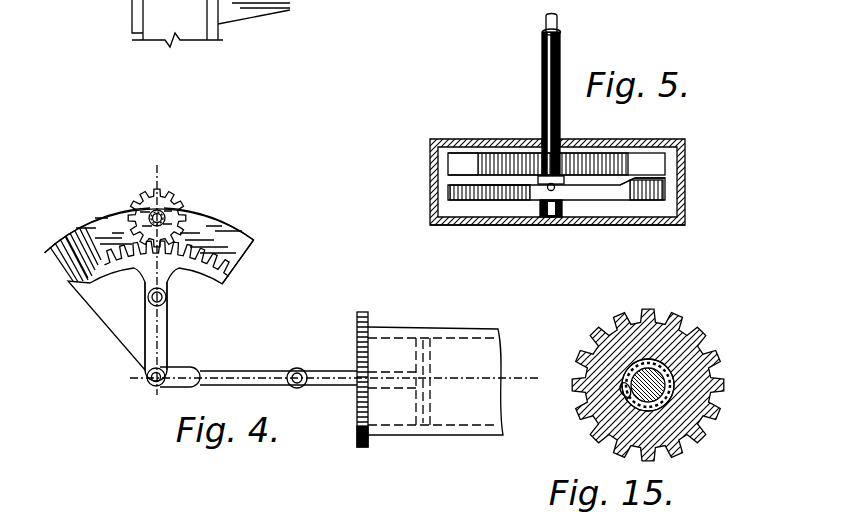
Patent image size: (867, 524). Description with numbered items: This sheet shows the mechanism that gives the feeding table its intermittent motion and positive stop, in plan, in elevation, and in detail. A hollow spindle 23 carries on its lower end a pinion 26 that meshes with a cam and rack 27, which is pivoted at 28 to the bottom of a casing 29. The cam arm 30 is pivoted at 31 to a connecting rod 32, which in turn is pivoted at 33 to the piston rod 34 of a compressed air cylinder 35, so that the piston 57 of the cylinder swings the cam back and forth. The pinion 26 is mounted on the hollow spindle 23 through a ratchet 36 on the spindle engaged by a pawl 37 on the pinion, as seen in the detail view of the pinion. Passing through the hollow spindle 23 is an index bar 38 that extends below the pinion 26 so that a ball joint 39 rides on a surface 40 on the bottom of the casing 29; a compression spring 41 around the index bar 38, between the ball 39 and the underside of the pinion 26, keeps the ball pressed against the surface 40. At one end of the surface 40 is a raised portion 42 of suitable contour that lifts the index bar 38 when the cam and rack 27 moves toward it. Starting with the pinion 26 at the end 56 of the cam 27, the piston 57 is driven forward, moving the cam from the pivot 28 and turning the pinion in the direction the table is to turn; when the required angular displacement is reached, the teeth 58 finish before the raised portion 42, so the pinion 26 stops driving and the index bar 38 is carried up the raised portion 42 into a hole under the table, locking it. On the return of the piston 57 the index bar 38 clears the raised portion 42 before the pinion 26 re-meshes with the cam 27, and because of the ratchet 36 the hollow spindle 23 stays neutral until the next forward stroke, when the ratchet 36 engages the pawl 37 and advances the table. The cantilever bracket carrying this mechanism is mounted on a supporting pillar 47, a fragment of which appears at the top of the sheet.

In FIG. 4, the hollow spindle 23 is at (161, 213).
In FIG. 5, the hollow spindle 23 is at (542, 97).
In FIG. 4, the pinion 26 is at (166, 218).
In FIG. 5, the pinion 26 is at (565, 165).
In FIG. 15, the pinion 26 is at (680, 318).
In FIG. 4, the cam and rack 27 is at (233, 270).
In FIG. 5, the cam and rack 27 is at (630, 163).
In FIG. 4, the pivot 28 is at (167, 297).
In FIG. 5, the pivot 28 is at (590, 226).
In FIG. 5, the casing 29 is at (684, 215).
In FIG. 4, the cam arm 30 is at (145, 344).
In FIG. 4, the pivot 31 is at (150, 384).
In FIG. 4, the connecting rod 32 is at (207, 372).
In FIG. 4, the pivot 33 is at (299, 386).
In FIG. 4, the piston rod 34 is at (344, 370).
In FIG. 4, the compressed air cylinder 35 is at (392, 352).
In FIG. 15, the ratchet 36 is at (672, 370).
In FIG. 15, the pawl 37 is at (621, 402).
In FIG. 4, the index bar 38 is at (168, 215).
In FIG. 5, the index bar 38 is at (558, 26).
In FIG. 15, the index bar 38 is at (653, 389).
In FIG. 5, the ball joint 39 is at (552, 186).
In FIG. 4, the surface 40 is at (221, 245).
In FIG. 5, the surface 40 is at (500, 185).
In FIG. 5, the compression spring 41 is at (560, 203).
In FIG. 4, the raised portion 42 is at (58, 252).
In FIG. 5, the raised portion 42 is at (634, 180).
In FIG. 4, the supporting pillar 47 is at (168, 3).
In FIG. 4, the end of cam 56 is at (228, 285).
In FIG. 4, the piston 57 is at (422, 416).
In FIG. 4, the teeth 58 is at (198, 248).
In FIG. 5, the teeth 58 is at (478, 165).